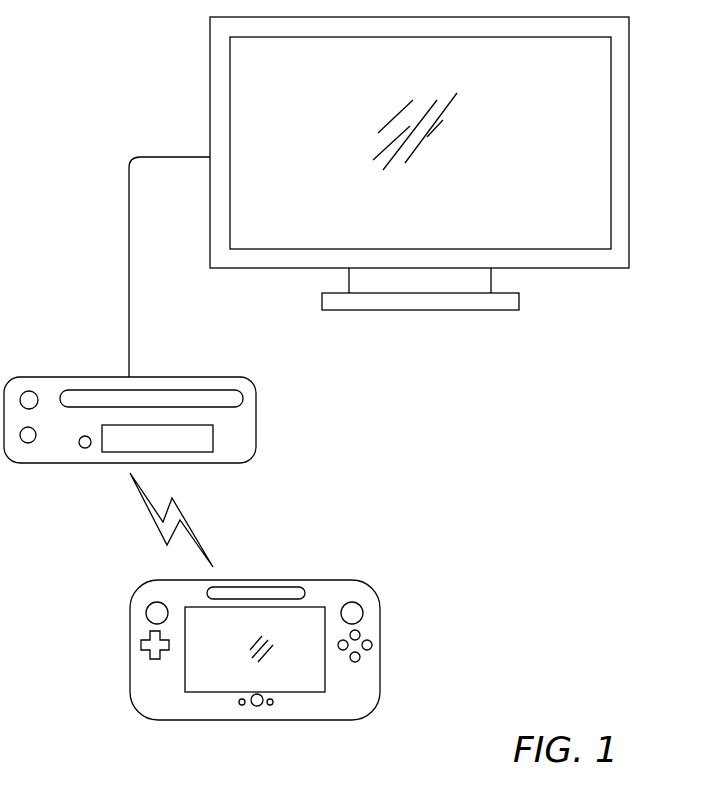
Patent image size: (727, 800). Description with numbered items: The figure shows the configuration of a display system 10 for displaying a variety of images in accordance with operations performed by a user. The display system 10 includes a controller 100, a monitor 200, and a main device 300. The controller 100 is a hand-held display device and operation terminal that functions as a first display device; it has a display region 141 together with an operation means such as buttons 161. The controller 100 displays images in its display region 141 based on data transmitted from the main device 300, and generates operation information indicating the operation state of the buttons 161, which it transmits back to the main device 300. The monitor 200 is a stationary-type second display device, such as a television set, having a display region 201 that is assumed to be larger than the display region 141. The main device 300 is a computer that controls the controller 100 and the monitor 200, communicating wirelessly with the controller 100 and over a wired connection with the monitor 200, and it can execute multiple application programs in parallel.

The display system 10 is at (566, 603).
The controller 100 is at (254, 652).
The display region 141 is at (315, 687).
The buttons 161 is at (140, 645).
The monitor 200 is at (382, 163).
The display region 201 is at (245, 118).
The main device 300 is at (95, 377).